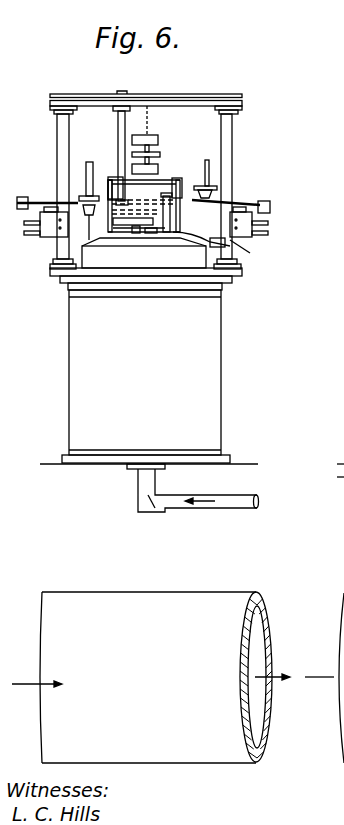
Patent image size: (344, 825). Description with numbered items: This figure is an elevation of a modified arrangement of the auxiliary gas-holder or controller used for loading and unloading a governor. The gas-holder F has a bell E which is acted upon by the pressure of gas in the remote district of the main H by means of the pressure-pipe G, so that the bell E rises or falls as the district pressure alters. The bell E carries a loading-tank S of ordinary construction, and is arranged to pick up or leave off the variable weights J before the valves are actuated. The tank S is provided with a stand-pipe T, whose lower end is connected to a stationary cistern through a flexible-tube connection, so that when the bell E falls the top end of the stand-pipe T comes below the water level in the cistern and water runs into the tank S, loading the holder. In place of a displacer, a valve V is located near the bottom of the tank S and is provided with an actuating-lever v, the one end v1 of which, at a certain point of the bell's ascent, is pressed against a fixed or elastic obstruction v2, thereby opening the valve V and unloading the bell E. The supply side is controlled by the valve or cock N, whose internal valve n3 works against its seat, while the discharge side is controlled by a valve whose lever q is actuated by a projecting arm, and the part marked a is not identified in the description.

The lever q is at (58, 201).
The fixed or elastic obstruction v2 is at (116, 181).
The variable weights J is at (157, 169).
The loading-tank S is at (174, 190).
The valve n3 is at (233, 201).
The left valve body a is at (48, 237).
The end of actuating-lever v1 is at (113, 221).
The actuating-lever v is at (140, 229).
The auxiliary gas-holder bell E is at (144, 253).
The valve V is at (152, 234).
The stand-pipe T is at (172, 231).
The valve or cock N is at (250, 232).
The gas-holder F is at (145, 372).
The pressure-pipe G is at (258, 500).
The main H is at (178, 677).